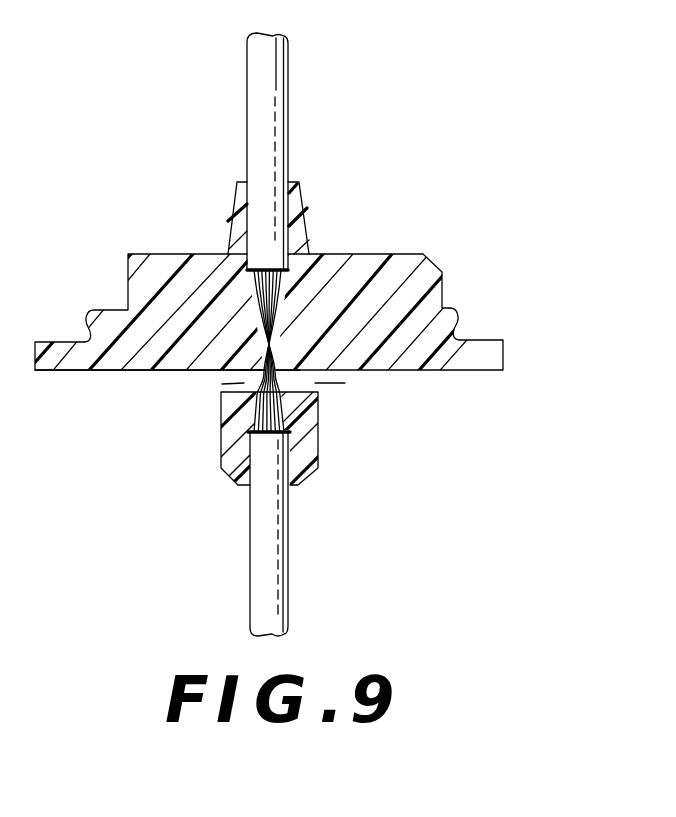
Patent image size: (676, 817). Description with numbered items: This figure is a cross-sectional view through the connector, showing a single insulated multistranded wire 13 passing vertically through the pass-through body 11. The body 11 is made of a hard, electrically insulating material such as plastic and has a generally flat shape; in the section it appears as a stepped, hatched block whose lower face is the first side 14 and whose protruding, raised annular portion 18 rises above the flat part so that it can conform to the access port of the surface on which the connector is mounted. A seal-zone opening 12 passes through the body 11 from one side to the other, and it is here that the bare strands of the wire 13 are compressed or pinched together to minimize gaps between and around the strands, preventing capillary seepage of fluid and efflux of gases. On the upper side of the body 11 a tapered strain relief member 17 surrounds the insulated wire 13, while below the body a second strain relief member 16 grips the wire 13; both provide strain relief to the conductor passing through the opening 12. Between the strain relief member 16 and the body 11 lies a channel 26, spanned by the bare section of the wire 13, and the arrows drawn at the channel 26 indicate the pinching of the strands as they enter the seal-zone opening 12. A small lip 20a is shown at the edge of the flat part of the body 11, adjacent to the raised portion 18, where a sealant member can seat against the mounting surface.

The body 11 is at (505, 356).
The seal-zone opening 12 is at (252, 383).
The insulated electrical conductor 13 is at (267, 105).
The first side 14 is at (69, 375).
The strain relief member 16 is at (318, 450).
The strain relief member 17 is at (303, 220).
The raised annular portion 18 is at (443, 291).
The flange lip 20a is at (455, 328).
The channel 26 is at (306, 383).